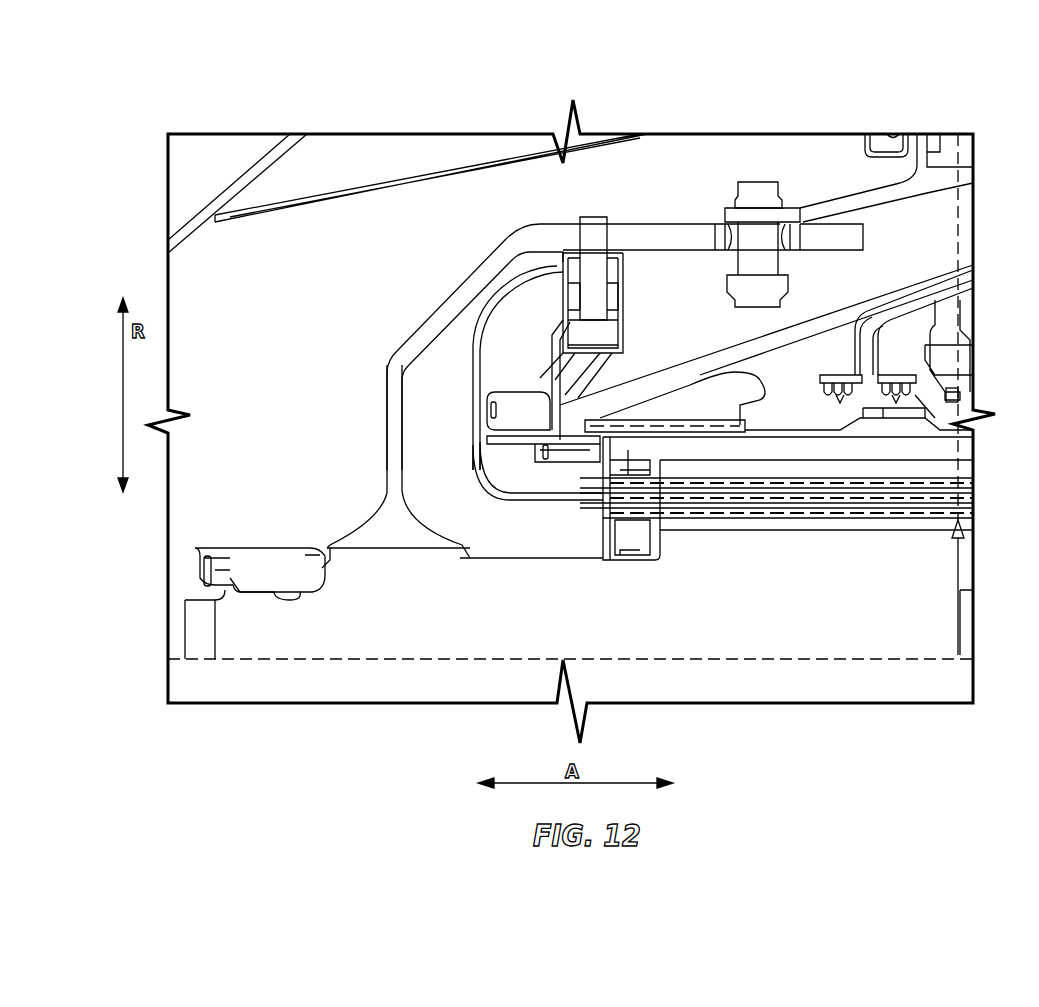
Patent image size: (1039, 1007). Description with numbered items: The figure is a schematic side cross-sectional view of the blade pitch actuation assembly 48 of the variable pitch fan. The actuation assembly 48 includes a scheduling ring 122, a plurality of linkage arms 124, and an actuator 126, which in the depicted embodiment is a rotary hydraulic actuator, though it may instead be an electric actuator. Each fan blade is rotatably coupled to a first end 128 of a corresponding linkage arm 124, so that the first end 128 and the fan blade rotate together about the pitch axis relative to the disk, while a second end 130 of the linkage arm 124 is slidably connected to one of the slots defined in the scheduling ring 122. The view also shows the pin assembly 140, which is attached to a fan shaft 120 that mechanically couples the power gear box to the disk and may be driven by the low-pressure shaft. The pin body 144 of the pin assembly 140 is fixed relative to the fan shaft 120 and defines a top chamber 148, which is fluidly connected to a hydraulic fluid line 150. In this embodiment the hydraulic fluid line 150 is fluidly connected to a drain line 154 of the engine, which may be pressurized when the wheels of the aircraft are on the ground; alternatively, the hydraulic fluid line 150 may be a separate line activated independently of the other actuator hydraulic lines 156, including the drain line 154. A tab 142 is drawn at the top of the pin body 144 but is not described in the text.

The blade pitch actuation assembly 48 is at (443, 196).
The pin assembly 140 is at (556, 260).
The scheduling ring 122 is at (688, 232).
The second end 130 is at (755, 182).
The linkage arm 124 is at (847, 204).
The first end 128 is at (942, 206).
The mounting tab 142 is at (594, 265).
The top chamber 148 is at (611, 262).
The pin body 144 is at (623, 328).
The hydraulic fluid line 150 is at (478, 345).
The actuator 126 is at (284, 532).
The fan shaft 120 is at (712, 440).
The drain line 154 is at (805, 498).
The actuator hydraulic lines 156 is at (872, 540).